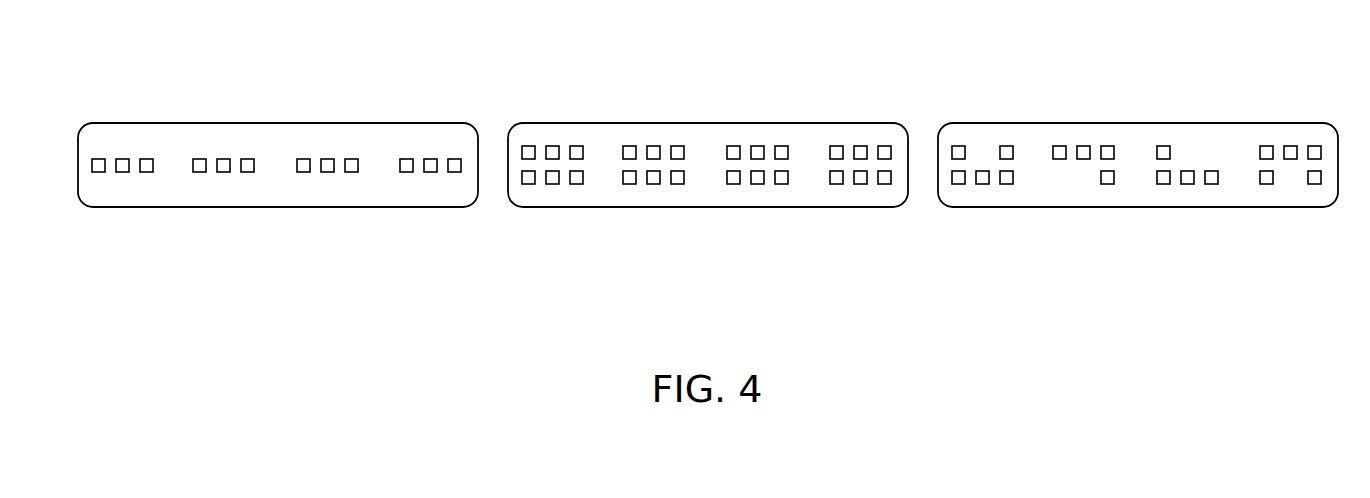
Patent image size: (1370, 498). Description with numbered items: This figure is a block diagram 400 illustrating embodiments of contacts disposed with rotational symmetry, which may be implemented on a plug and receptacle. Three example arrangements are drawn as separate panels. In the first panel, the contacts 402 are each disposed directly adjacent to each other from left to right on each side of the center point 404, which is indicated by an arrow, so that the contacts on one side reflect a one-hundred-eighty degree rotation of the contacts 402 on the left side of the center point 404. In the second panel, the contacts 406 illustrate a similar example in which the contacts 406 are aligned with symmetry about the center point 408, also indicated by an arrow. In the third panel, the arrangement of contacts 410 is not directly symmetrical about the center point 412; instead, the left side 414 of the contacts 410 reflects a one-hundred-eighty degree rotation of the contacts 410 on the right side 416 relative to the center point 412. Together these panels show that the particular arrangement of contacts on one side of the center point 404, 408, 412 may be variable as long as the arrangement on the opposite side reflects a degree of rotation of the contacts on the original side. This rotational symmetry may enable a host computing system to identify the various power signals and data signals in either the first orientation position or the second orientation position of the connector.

The connector panel assembly 400 is at (684, 358).
The contacts 402 is at (185, 207).
The center point 404 is at (267, 136).
The contacts 406 is at (647, 207).
The center point 408 is at (701, 139).
The contacts 410 is at (1058, 208).
The center point 412 is at (1137, 152).
The left side 414 is at (1330, 120).
The right side 416 is at (1127, 120).